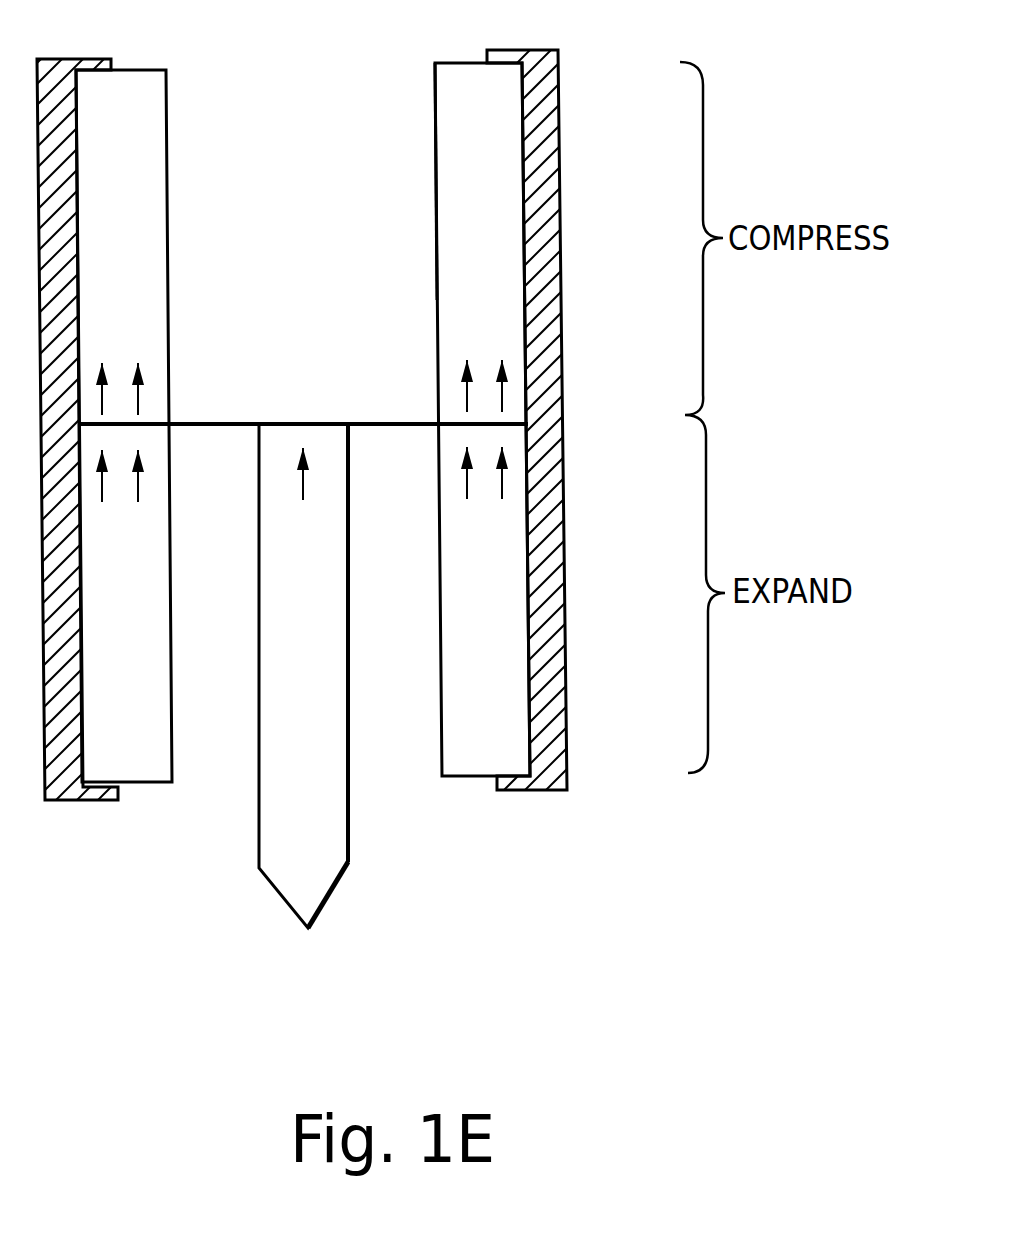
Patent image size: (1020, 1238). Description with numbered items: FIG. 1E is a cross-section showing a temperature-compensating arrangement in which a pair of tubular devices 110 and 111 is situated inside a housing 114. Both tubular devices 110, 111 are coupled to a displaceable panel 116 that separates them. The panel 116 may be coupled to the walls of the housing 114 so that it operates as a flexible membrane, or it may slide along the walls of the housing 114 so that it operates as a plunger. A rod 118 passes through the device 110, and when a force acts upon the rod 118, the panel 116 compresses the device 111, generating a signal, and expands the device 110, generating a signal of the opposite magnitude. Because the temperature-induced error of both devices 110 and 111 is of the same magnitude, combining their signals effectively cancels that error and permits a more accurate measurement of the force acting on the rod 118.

The tubular device 110 is at (472, 763).
The tubular device 111 is at (448, 181).
The housing 114 is at (565, 557).
The displaceable panel 116 is at (232, 420).
The rod 118 is at (310, 887).